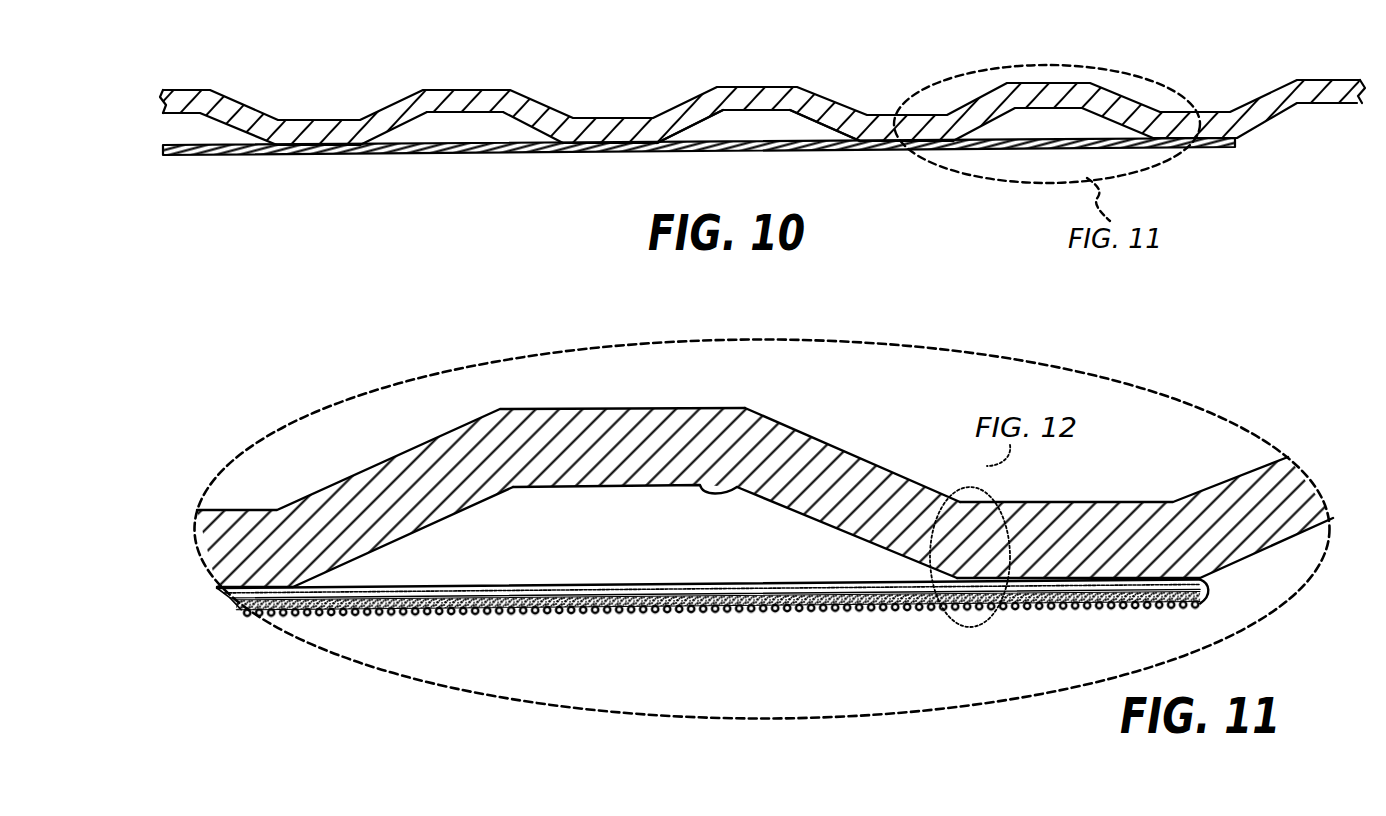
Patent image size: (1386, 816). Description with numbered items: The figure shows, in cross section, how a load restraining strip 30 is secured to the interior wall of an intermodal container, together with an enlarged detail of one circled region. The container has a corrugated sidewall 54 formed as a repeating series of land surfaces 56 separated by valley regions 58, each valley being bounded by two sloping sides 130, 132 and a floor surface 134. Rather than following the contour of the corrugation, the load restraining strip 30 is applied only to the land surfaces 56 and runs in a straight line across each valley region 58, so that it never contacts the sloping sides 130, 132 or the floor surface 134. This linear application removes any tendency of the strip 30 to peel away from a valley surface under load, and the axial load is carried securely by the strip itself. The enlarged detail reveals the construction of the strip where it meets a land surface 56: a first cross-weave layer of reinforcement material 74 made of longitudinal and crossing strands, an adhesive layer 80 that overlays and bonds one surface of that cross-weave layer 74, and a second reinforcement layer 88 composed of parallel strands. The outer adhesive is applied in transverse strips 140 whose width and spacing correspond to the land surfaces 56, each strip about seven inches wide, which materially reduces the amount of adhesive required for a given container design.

In FIG. 10, the load restraining strip 30 is at (439, 162).
In FIG. 10, the intermodal container sidewall 54 is at (516, 93).
In FIG. 11, the intermodal container sidewall 54 is at (658, 407).
In FIG. 10, the land surfaces 56 is at (316, 156).
In FIG. 11, the land surfaces 56 is at (1072, 615).
In FIG. 10, the valley regions 58 is at (451, 132).
In FIG. 11, the valley regions 58 is at (639, 547).
In FIG. 11, the cross-weave layer of reinforcement material 74 is at (625, 617).
In FIG. 11, the adhesive layer 80 is at (428, 621).
In FIG. 11, the second reinforcement layer 88 is at (513, 588).
In FIG. 10, the sloping side 130 is at (697, 128).
In FIG. 11, the sloping side 130 is at (393, 538).
In FIG. 10, the sloping side 132 is at (815, 126).
In FIG. 11, the sloping side 132 is at (830, 528).
In FIG. 10, the floor surface 134 is at (427, 120).
In FIG. 11, the floor surface 134 is at (790, 440).
In FIG. 11, the transverse strips 140 is at (295, 617).